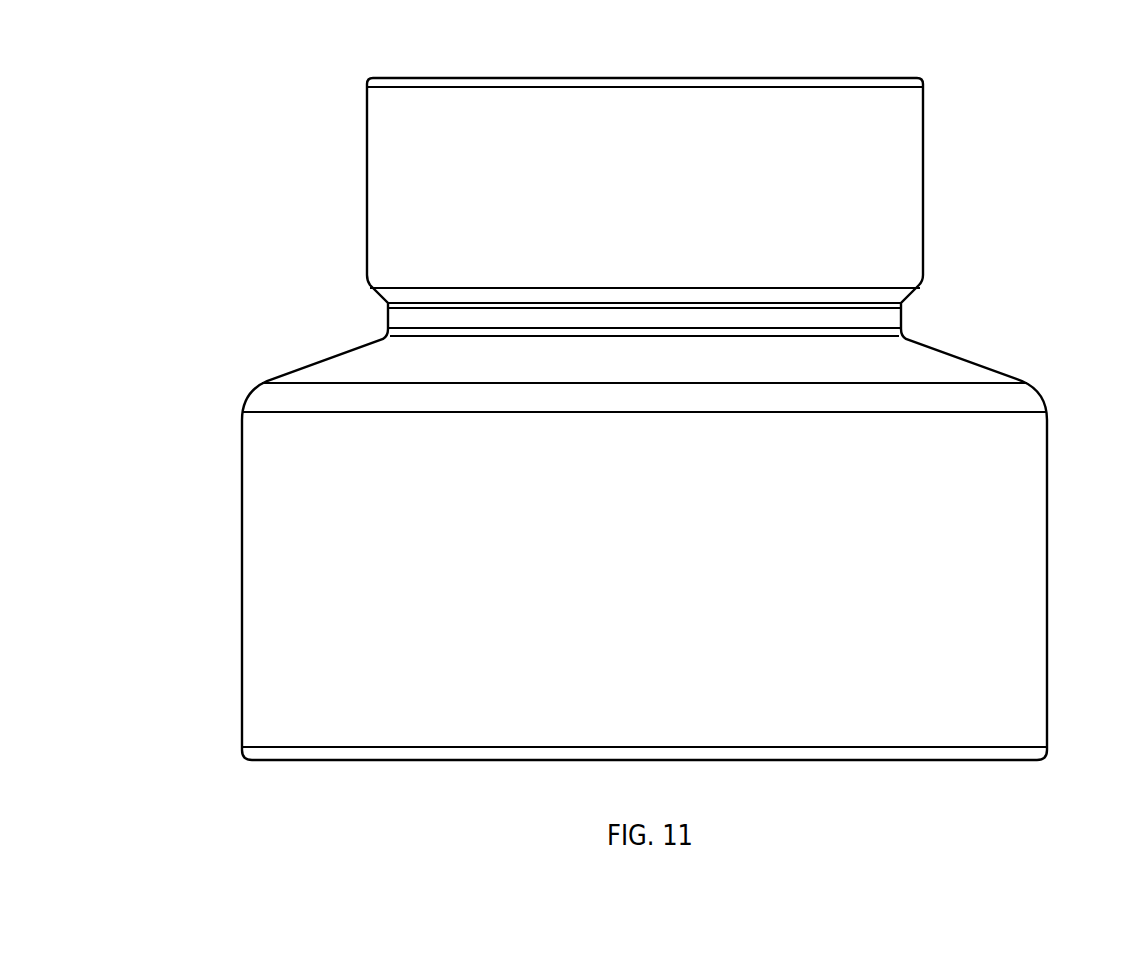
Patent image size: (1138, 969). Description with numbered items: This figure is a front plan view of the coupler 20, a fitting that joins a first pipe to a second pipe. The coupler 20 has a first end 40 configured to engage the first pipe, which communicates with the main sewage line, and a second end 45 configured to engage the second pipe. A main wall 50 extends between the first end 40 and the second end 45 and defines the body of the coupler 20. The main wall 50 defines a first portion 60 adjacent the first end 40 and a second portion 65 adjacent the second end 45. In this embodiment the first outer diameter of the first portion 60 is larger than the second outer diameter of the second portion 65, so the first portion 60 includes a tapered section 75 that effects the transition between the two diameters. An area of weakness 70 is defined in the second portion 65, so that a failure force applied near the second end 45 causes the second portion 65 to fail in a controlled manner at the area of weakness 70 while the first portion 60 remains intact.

The coupler 20 is at (990, 194).
The first end 40 is at (932, 755).
The second end 45 is at (880, 77).
The main wall 50 is at (910, 136).
The first portion 60 is at (606, 595).
The second portion 65 is at (598, 188).
The area of weakness 70 is at (920, 315).
The tapered section 75 is at (1001, 352).